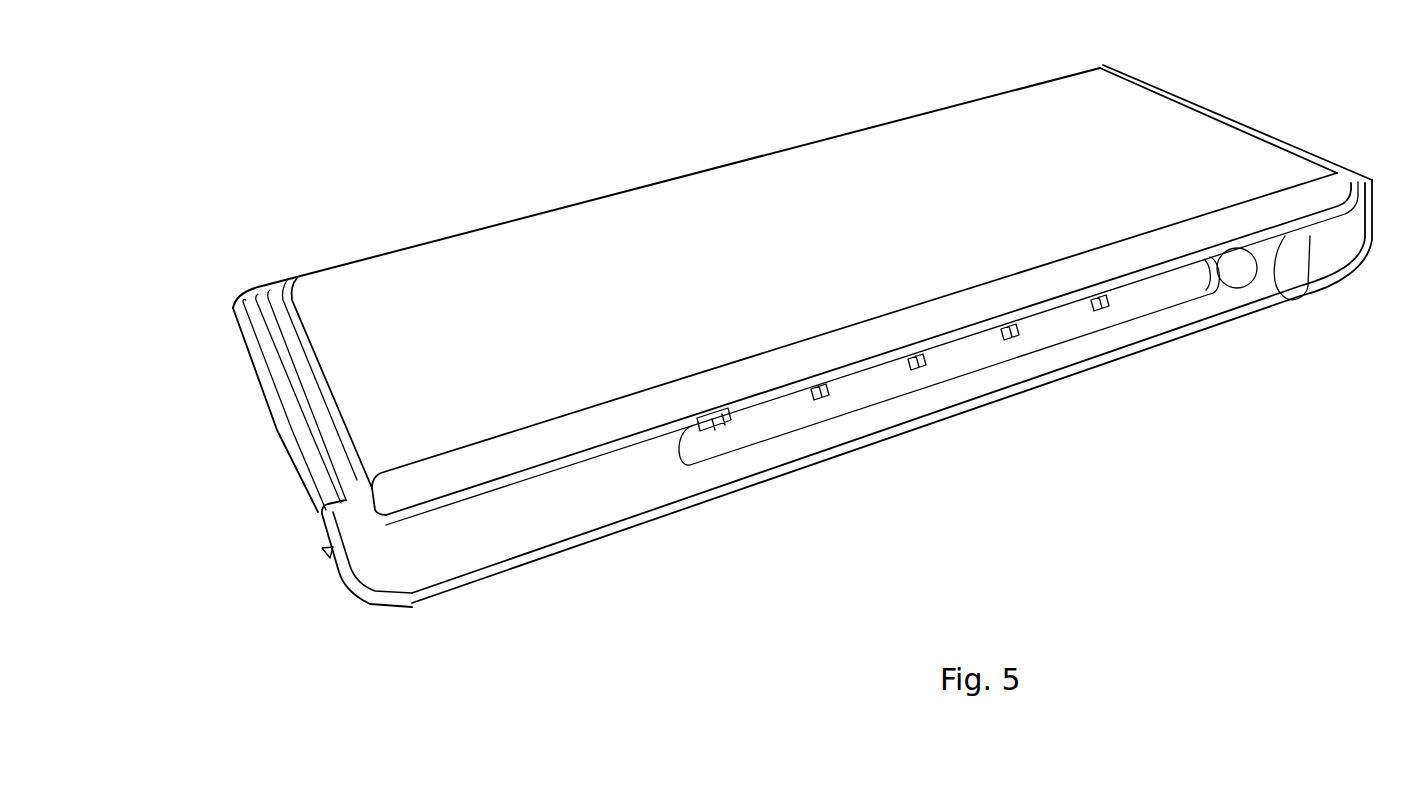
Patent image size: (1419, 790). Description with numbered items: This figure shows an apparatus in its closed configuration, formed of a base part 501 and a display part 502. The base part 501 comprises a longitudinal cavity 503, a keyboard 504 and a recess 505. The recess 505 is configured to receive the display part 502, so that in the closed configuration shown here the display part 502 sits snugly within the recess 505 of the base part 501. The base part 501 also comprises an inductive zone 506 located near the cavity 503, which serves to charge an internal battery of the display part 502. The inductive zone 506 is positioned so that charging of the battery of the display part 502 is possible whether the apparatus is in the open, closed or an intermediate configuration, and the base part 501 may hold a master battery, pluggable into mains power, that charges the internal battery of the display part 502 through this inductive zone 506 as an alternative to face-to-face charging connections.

The base part 501 is at (683, 514).
The display part 502 is at (625, 187).
The longitudinal cavity 503 is at (1307, 263).
The keyboard 504 is at (893, 383).
The recess 505 is at (365, 522).
The inductive zone 506 is at (1237, 283).